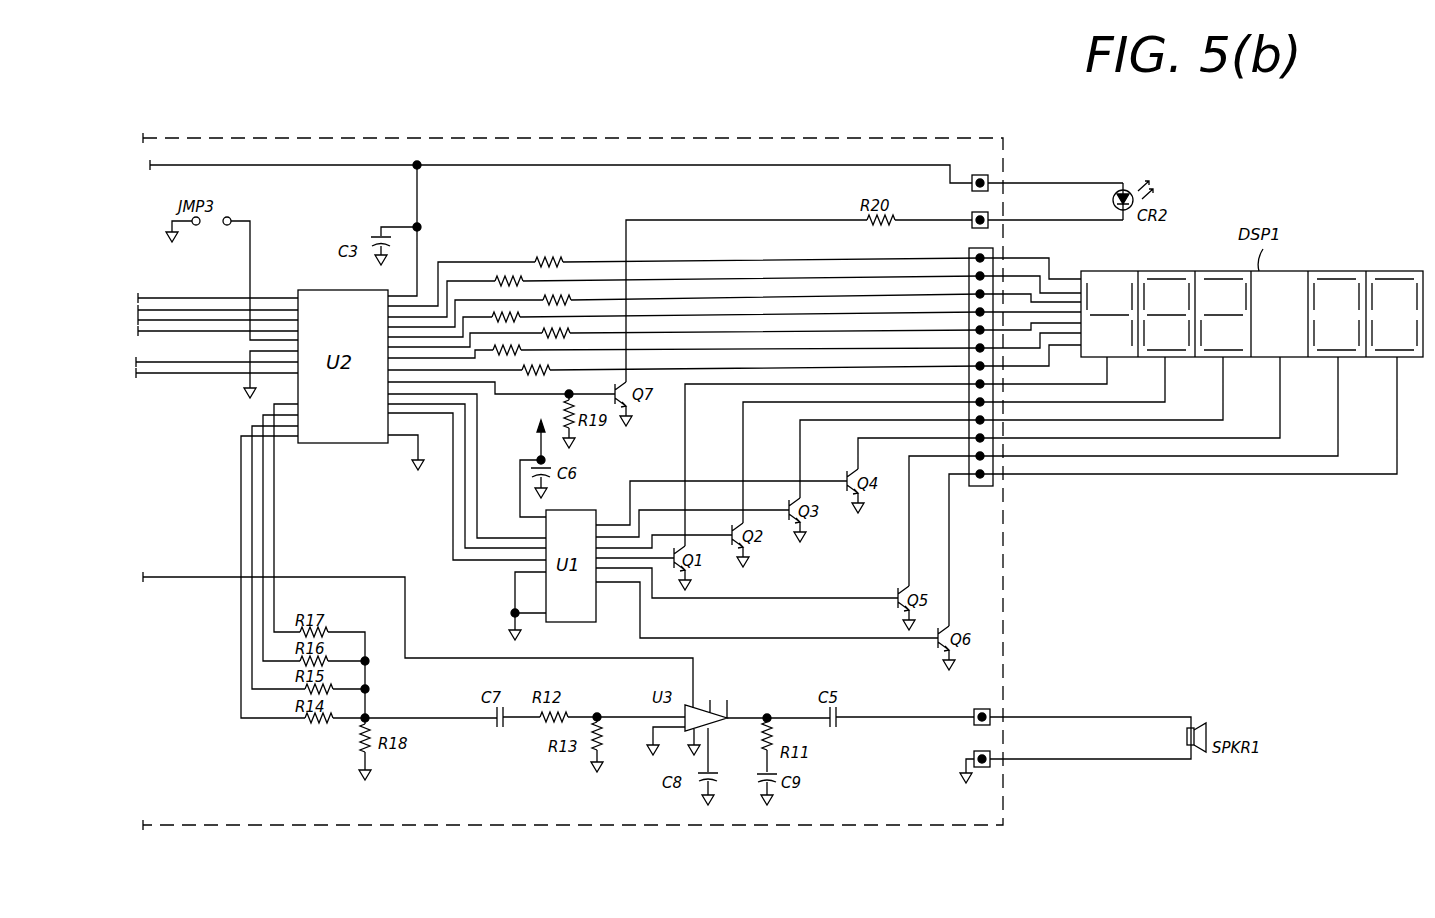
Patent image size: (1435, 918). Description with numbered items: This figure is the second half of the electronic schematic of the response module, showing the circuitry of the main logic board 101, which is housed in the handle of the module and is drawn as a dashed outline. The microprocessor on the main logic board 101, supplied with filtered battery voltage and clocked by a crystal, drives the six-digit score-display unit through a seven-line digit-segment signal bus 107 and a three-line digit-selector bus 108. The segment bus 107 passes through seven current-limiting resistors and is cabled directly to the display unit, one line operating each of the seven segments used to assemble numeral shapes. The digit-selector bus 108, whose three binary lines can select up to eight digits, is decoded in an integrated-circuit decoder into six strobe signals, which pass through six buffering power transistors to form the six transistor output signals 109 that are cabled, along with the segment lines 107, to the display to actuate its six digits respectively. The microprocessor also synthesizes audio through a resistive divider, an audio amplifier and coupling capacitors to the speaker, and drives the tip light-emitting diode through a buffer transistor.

The main logic board 101 is at (389, 138).
The seven-line digit-segment signal bus 107 is at (797, 350).
The three-line digit-selector bus 108 is at (477, 522).
The transistor output signals 109 is at (1004, 512).